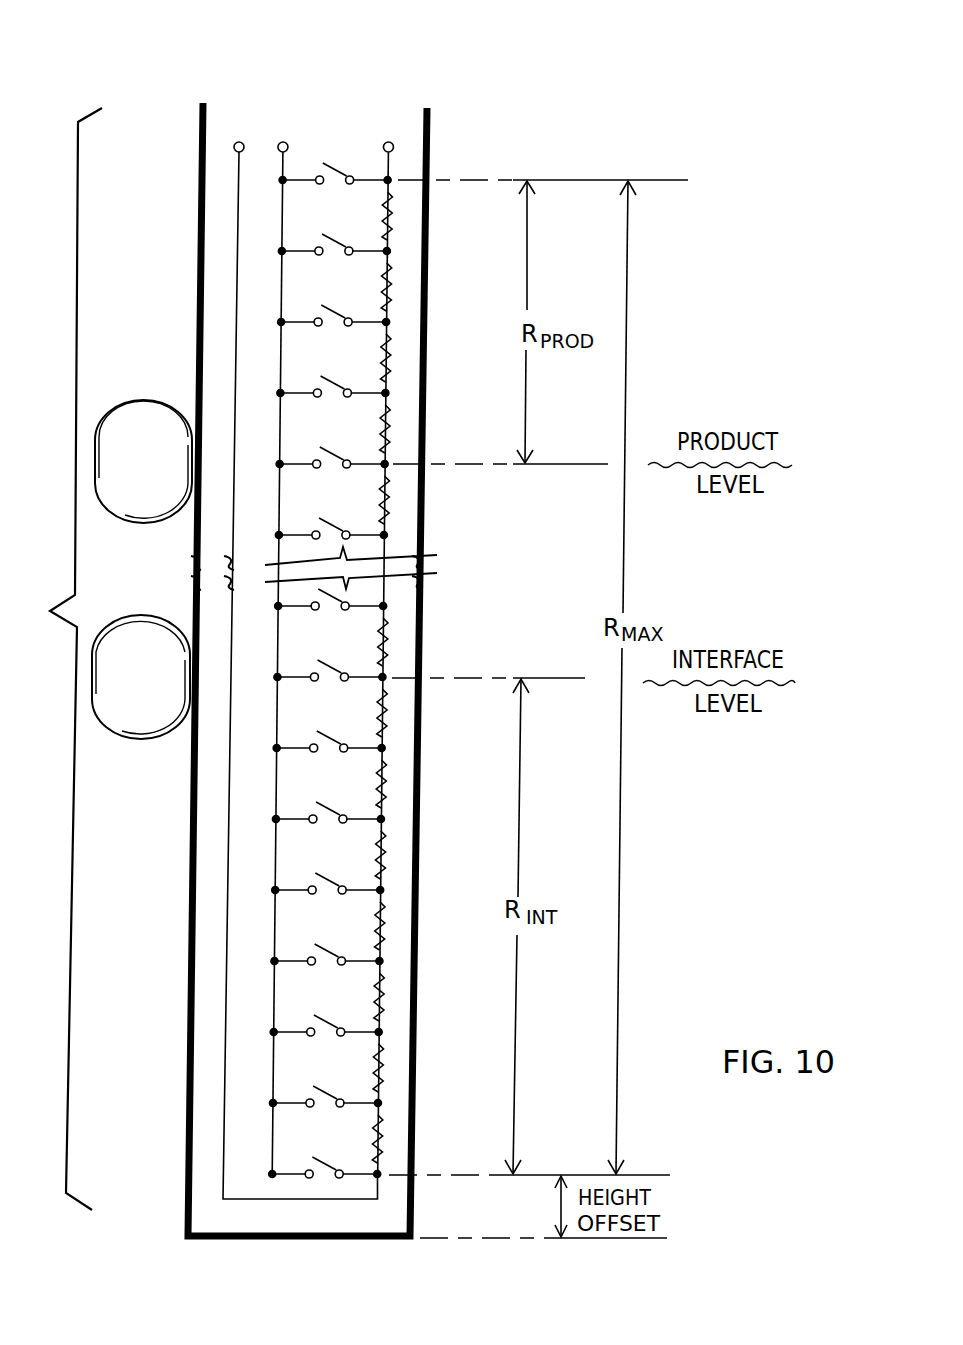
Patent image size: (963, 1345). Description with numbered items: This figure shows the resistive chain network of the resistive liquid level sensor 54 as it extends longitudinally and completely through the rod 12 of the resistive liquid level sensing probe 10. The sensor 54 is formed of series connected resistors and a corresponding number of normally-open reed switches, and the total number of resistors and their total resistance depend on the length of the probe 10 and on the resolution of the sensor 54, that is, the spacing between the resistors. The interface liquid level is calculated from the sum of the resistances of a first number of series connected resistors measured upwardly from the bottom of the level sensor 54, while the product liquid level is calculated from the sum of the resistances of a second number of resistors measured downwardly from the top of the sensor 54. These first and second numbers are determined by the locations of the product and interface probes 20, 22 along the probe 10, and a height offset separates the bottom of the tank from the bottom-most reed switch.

The resistive liquid level sensing probe 10 is at (59, 659).
The rod 12 is at (200, 237).
The product probe 20 is at (118, 402).
The interface probe 22 is at (143, 615).
The resistive liquid level sensor 54 is at (265, 857).